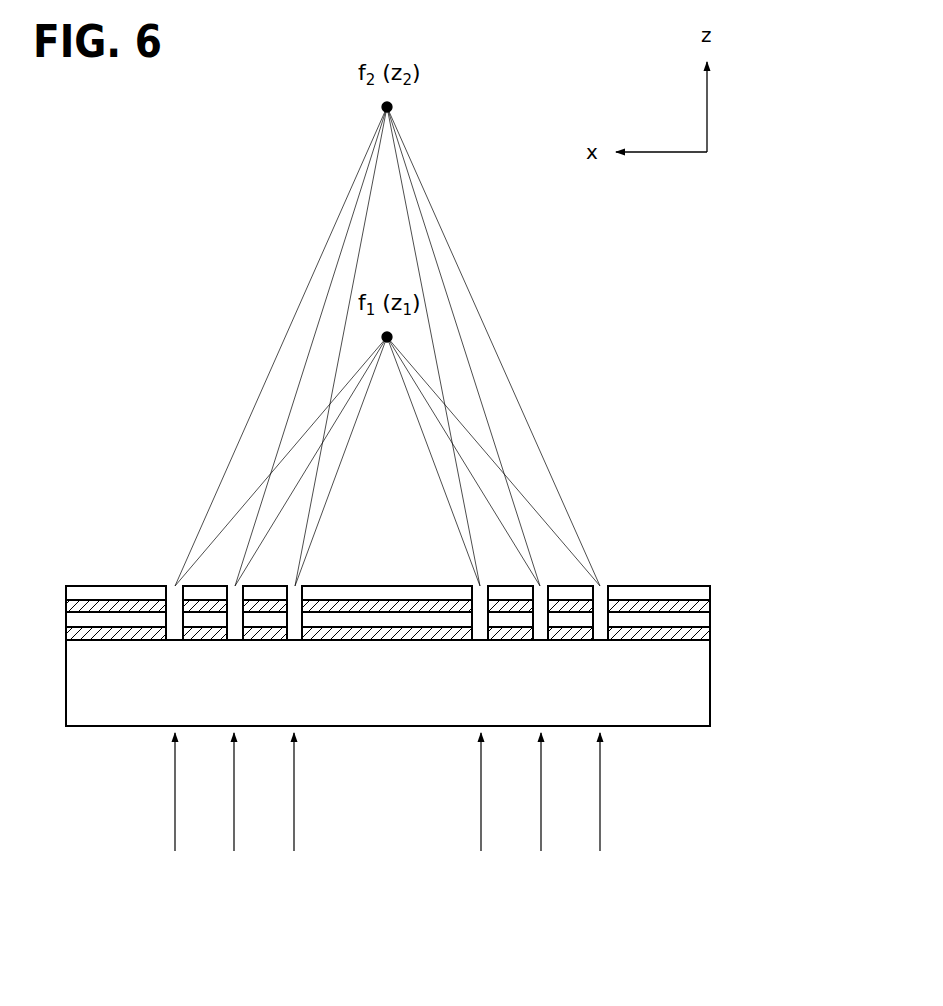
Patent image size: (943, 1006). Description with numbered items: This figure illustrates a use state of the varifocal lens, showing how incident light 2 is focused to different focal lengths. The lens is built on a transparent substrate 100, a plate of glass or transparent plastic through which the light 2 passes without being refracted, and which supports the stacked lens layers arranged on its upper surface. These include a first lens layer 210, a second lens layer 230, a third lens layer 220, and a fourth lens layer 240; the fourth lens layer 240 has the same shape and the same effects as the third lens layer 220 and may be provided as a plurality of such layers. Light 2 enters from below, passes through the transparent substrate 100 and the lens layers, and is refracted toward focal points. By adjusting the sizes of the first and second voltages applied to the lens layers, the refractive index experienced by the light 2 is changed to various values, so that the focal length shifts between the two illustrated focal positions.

The first lens layer 210 is at (437, 583).
The third lens layer 220 is at (510, 583).
The fourth lens layer 240 is at (567, 583).
The second lens layer 230 is at (663, 583).
The transparent substrate 100 is at (682, 678).
The light 2 is at (600, 792).